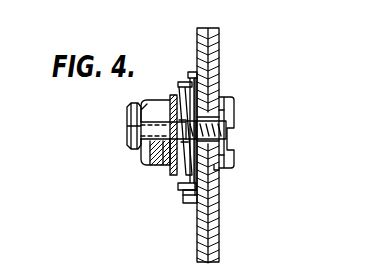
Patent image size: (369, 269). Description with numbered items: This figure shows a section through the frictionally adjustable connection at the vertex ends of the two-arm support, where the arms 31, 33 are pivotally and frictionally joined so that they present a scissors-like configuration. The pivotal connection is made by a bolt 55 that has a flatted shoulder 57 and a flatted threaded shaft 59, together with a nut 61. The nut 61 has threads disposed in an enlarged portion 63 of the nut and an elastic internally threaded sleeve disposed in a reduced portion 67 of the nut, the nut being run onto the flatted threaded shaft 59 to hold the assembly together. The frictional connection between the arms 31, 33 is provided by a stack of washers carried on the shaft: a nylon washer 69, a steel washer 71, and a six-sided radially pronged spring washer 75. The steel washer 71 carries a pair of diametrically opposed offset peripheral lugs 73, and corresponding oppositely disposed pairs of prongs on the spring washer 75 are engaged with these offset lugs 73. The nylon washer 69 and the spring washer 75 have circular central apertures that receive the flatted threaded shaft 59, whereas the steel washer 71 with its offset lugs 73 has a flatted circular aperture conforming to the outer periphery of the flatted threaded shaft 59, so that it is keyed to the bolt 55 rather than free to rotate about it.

The arm 31 is at (197, 44).
The arm 33 is at (220, 51).
The bolt 55 is at (228, 152).
The flatted shoulder 57 is at (212, 127).
The flatted threaded shaft 59 is at (168, 123).
The nut 61 is at (146, 177).
The enlarged portion 63 is at (153, 110).
The reduced portion 67 is at (128, 106).
The nylon washer 69 is at (190, 196).
The steel washer 71 is at (189, 197).
The offset peripheral lugs 73 is at (178, 186).
The spring washer 75 is at (183, 170).